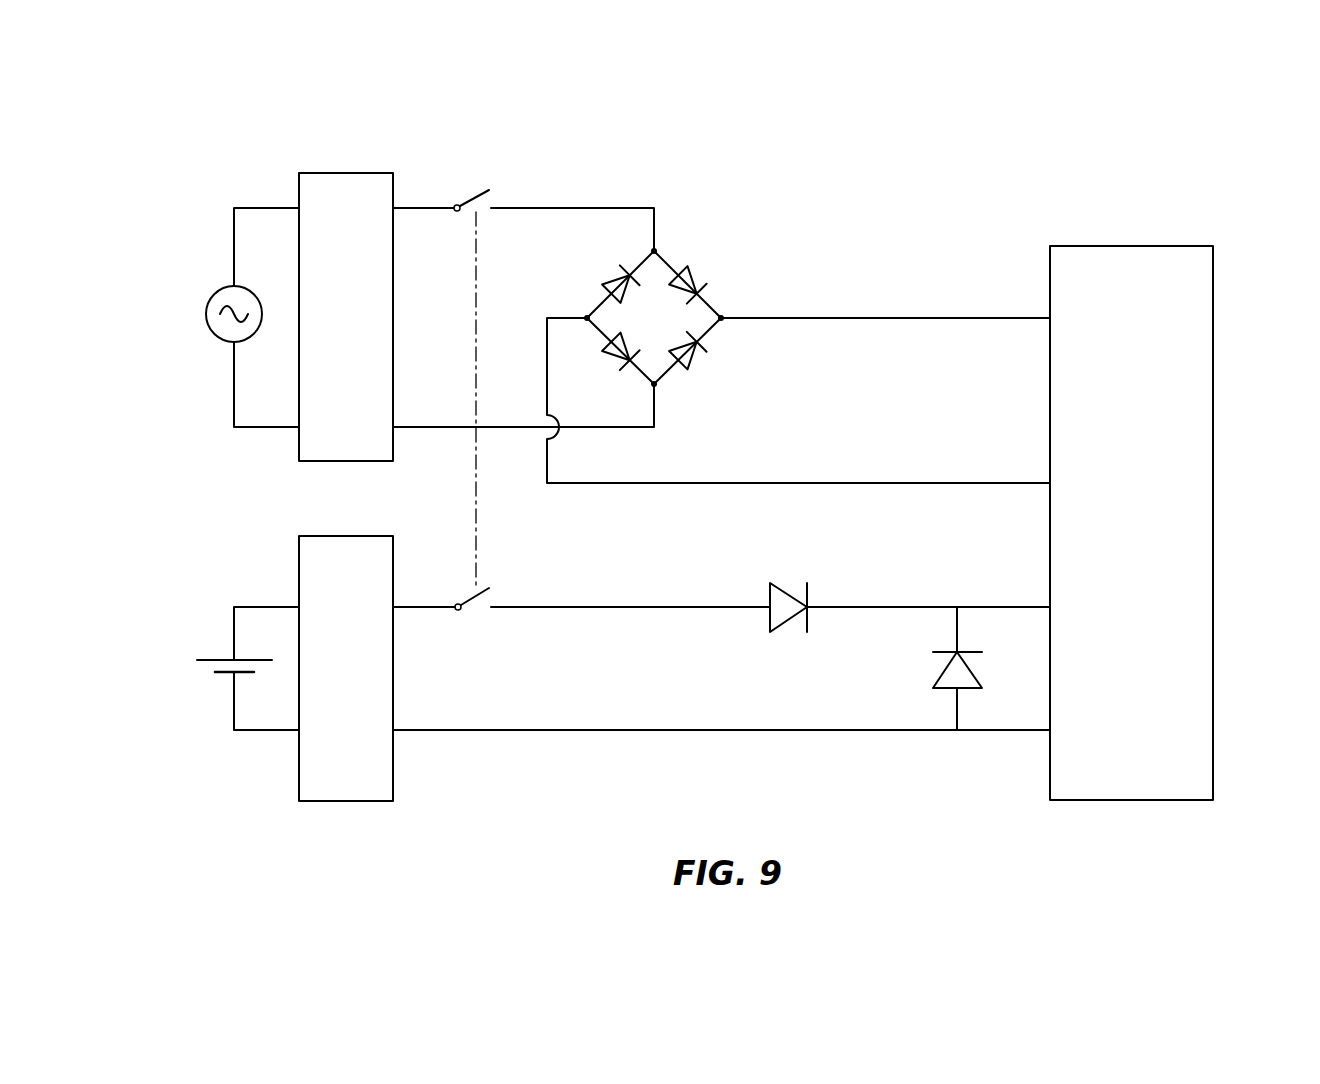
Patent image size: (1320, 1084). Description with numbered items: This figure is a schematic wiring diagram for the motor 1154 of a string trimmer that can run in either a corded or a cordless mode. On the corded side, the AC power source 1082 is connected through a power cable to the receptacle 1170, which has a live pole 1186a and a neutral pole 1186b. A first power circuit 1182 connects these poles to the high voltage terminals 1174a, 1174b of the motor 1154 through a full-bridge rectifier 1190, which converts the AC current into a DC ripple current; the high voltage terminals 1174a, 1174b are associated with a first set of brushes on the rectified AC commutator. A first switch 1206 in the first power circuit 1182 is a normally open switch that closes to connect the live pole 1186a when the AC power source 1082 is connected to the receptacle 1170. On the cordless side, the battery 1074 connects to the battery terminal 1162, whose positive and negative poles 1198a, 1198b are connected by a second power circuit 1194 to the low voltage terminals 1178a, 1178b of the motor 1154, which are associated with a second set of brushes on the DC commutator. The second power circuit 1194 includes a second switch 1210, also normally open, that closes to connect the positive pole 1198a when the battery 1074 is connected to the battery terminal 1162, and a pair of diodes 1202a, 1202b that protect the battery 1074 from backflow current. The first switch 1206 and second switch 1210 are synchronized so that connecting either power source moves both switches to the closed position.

The receptacle 1170 is at (299, 190).
The live pole 1186a is at (350, 173).
The neutral pole 1186b is at (327, 461).
The AC power source 1082 is at (212, 296).
The first switch 1206 is at (473, 190).
The first power circuit 1182 is at (782, 200).
The full-bridge rectifier 1190 is at (710, 333).
The high voltage terminal 1174a is at (1050, 315).
The high voltage terminal 1174b is at (1050, 481).
The motor 1154 is at (1213, 408).
The battery terminal 1162 is at (299, 757).
The positive pole 1198a is at (337, 536).
The negative pole 1198b is at (345, 801).
The battery 1074 is at (217, 657).
The second switch 1210 is at (472, 602).
The diode 1202a is at (793, 592).
The diode 1202b is at (945, 667).
The low voltage terminal 1178a is at (1050, 603).
The low voltage terminal 1178b is at (1050, 735).
The second power circuit 1194 is at (585, 768).